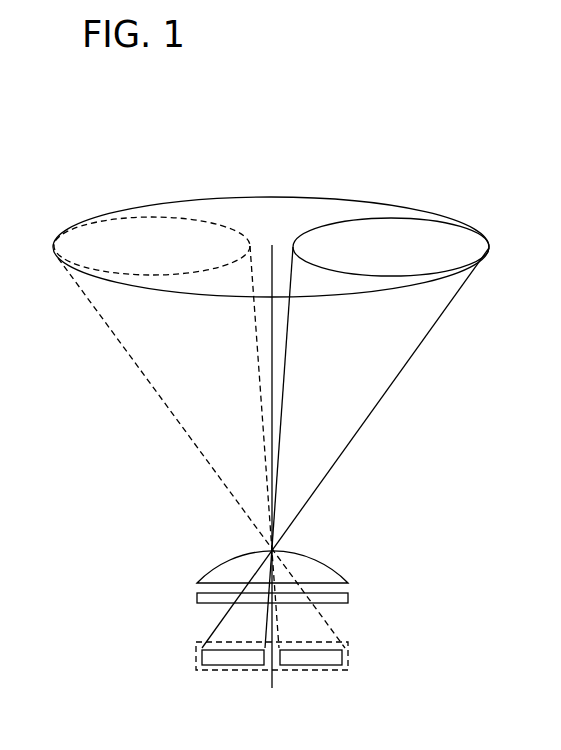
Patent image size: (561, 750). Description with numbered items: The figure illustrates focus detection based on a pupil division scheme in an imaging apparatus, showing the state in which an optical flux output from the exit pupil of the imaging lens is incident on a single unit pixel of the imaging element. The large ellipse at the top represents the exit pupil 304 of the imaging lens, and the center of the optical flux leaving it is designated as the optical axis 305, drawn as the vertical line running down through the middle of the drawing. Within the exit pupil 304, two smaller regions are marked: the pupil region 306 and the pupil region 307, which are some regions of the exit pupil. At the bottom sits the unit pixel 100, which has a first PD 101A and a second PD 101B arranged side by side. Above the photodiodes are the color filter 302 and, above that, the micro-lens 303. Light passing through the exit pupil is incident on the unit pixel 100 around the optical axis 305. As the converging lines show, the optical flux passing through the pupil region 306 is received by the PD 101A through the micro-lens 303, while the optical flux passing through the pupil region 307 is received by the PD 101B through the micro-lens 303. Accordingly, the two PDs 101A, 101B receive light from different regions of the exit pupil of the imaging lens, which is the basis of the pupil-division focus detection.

The unit pixel 100 is at (348, 650).
The first PD 101A is at (232, 665).
The second PD 101B is at (313, 665).
The color filter 302 is at (197, 598).
The micro-lens 303 is at (197, 581).
The exit pupil 304 is at (165, 203).
The optical axis 305 is at (273, 260).
The pupil region 306 is at (432, 220).
The pupil region 307 is at (112, 220).